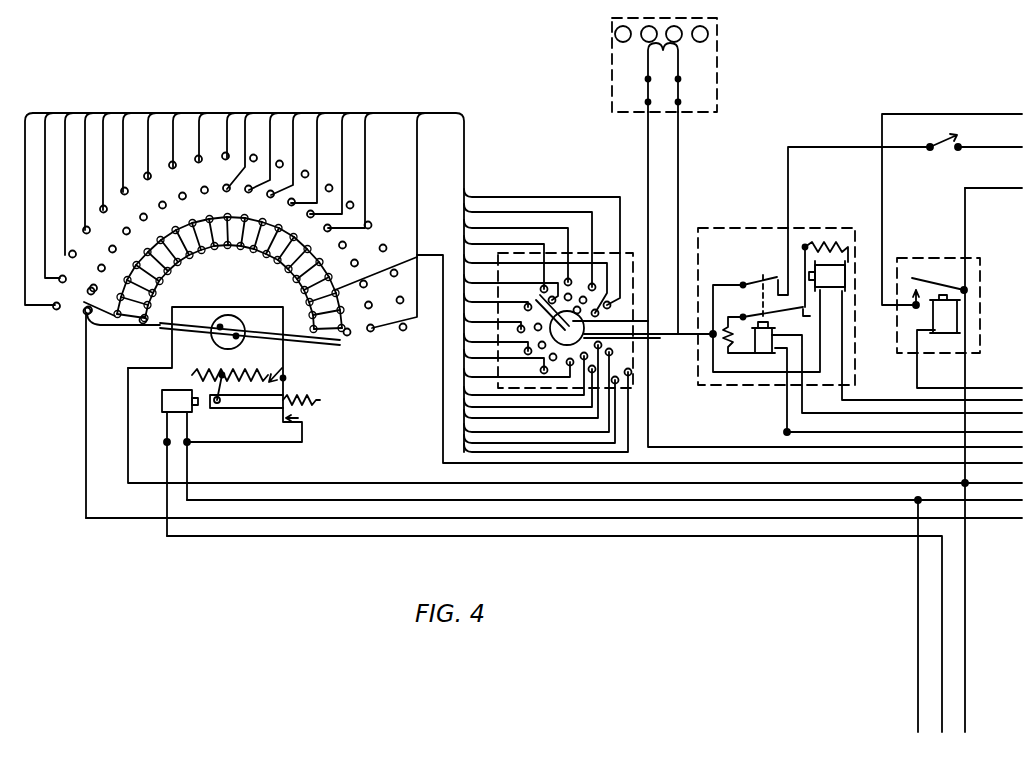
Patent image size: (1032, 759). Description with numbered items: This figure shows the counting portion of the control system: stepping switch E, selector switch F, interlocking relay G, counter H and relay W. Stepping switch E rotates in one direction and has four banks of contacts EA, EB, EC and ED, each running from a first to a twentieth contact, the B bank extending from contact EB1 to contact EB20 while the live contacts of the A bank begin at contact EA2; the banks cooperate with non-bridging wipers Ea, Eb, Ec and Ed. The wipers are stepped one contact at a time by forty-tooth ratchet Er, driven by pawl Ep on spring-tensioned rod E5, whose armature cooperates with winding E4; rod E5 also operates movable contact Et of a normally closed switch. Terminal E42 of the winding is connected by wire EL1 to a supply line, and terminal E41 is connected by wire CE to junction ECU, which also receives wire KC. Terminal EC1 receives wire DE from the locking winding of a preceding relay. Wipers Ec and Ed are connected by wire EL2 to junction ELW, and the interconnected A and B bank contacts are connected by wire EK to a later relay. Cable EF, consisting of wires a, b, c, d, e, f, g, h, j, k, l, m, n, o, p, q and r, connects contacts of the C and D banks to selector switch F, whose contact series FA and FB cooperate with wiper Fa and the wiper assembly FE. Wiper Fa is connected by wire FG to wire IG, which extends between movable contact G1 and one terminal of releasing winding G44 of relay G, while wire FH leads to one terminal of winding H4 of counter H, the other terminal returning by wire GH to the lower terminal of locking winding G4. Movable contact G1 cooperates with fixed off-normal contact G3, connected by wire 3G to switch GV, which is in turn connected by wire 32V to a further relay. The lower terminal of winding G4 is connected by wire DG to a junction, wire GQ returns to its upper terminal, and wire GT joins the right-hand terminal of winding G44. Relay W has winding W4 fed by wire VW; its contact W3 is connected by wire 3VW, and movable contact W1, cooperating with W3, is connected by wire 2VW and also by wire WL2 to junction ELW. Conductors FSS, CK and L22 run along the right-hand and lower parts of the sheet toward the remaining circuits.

The wire a is at (311, 272).
The wire b is at (303, 247).
The wire c is at (301, 243).
The wire d is at (303, 234).
The wire e is at (309, 223).
The wire f is at (322, 212).
The wire g is at (342, 203).
The wire h is at (366, 199).
The wire j is at (391, 202).
The wire k is at (417, 211).
The wire l is at (422, 278).
The wire m is at (425, 267).
The wire n is at (433, 262).
The wire o is at (439, 255).
The wire p is at (434, 208).
The wire q is at (467, 215).
The wire r is at (518, 284).
The cable EF is at (465, 143).
The contact bank C EC is at (212, 195).
The contact bank D ED is at (218, 165).
The contact bank A EA is at (272, 260).
The contact bank B EB is at (276, 226).
The first contact of B bank EB1 is at (71, 293).
The terminal EC1 is at (81, 314).
The stepping switch E is at (78, 356).
The wiper Ec is at (99, 329).
The wiper Ea is at (158, 327).
The second contact of A bank EA2 is at (145, 308).
The wiper Eb is at (276, 335).
The wiper Ed is at (341, 348).
The twentieth contact of B bank EB20 is at (347, 334).
The wire EK is at (442, 375).
The ratchet Er is at (215, 374).
The pawl Ep is at (216, 380).
The rod E5 is at (262, 410).
The movable contact Et is at (308, 411).
The stepping relay winding E4 is at (162, 405).
The terminal E42 is at (170, 438).
The terminal E41 is at (188, 446).
The wire EL2 is at (575, 427).
The junction ELW is at (999, 473).
The wire CE is at (604, 492).
The wire KC is at (1000, 491).
The wire DE is at (554, 509).
The wire EL1 is at (940, 633).
The junction ECU is at (895, 490).
The conductor CK is at (916, 601).
The conductor L22 is at (968, 610).
The selector switch F is at (565, 330).
The contact series FA is at (566, 376).
The wiper Fa is at (537, 331).
The wiper FE is at (556, 314).
The contact series FB is at (612, 352).
The wire FG is at (658, 342).
The conductor FSS is at (835, 280).
The wire FH is at (628, 127).
The wire GH is at (693, 223).
The counter H is at (664, 65).
The counter winding H4 is at (652, 58).
The interlocking relay G is at (776, 297).
The wire 3G is at (790, 198).
The movable contact G1 is at (758, 281).
The fixed off-normal contact G3 is at (769, 310).
The locking winding G4 is at (872, 378).
The releasing winding G44 is at (915, 330).
The wire IG is at (735, 382).
The wire GQ is at (1002, 405).
The wire GT is at (869, 391).
The wire DG is at (853, 423).
The switch GV is at (942, 151).
The wire 32V is at (993, 137).
The wire 3VW is at (952, 199).
The wire 2VW is at (993, 179).
The relay W is at (938, 295).
The movable contact W1 is at (939, 278).
The contact W3 is at (915, 311).
The relay winding W4 is at (957, 318).
The wire WL2 is at (972, 363).
The wire VW is at (1006, 379).